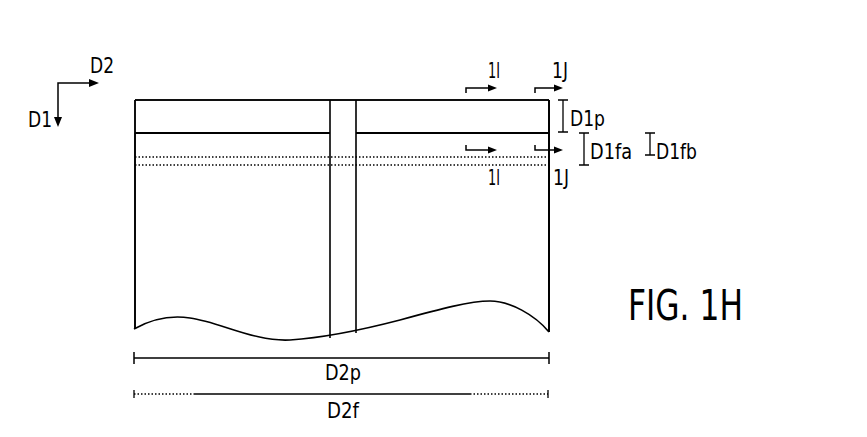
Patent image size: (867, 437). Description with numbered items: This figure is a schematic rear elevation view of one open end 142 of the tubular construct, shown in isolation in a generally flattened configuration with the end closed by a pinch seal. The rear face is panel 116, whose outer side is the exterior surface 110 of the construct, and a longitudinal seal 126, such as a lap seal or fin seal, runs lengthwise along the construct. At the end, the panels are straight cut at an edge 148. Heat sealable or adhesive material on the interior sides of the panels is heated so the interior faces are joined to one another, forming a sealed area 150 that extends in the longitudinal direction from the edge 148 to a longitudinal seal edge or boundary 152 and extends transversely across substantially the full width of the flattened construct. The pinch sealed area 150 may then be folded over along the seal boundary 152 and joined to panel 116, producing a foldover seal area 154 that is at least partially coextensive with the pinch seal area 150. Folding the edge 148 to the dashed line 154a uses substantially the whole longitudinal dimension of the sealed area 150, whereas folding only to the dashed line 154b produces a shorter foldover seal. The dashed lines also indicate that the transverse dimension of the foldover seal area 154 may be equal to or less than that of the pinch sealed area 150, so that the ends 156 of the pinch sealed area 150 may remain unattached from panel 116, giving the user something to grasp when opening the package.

The exterior surface 110 is at (193, 301).
The panel 116 is at (543, 287).
The longitudinal seal 126 is at (350, 287).
The open end 142 is at (663, 88).
The edge 148 is at (223, 100).
The sealed area 150 is at (146, 117).
The longitudinal seal edge or boundary 152 is at (222, 133).
The seal area 154 is at (319, 166).
The dashed line 154a is at (153, 165).
The dashed line 154b is at (367, 159).
The ends of the pinch sealed area 156 is at (148, 76).